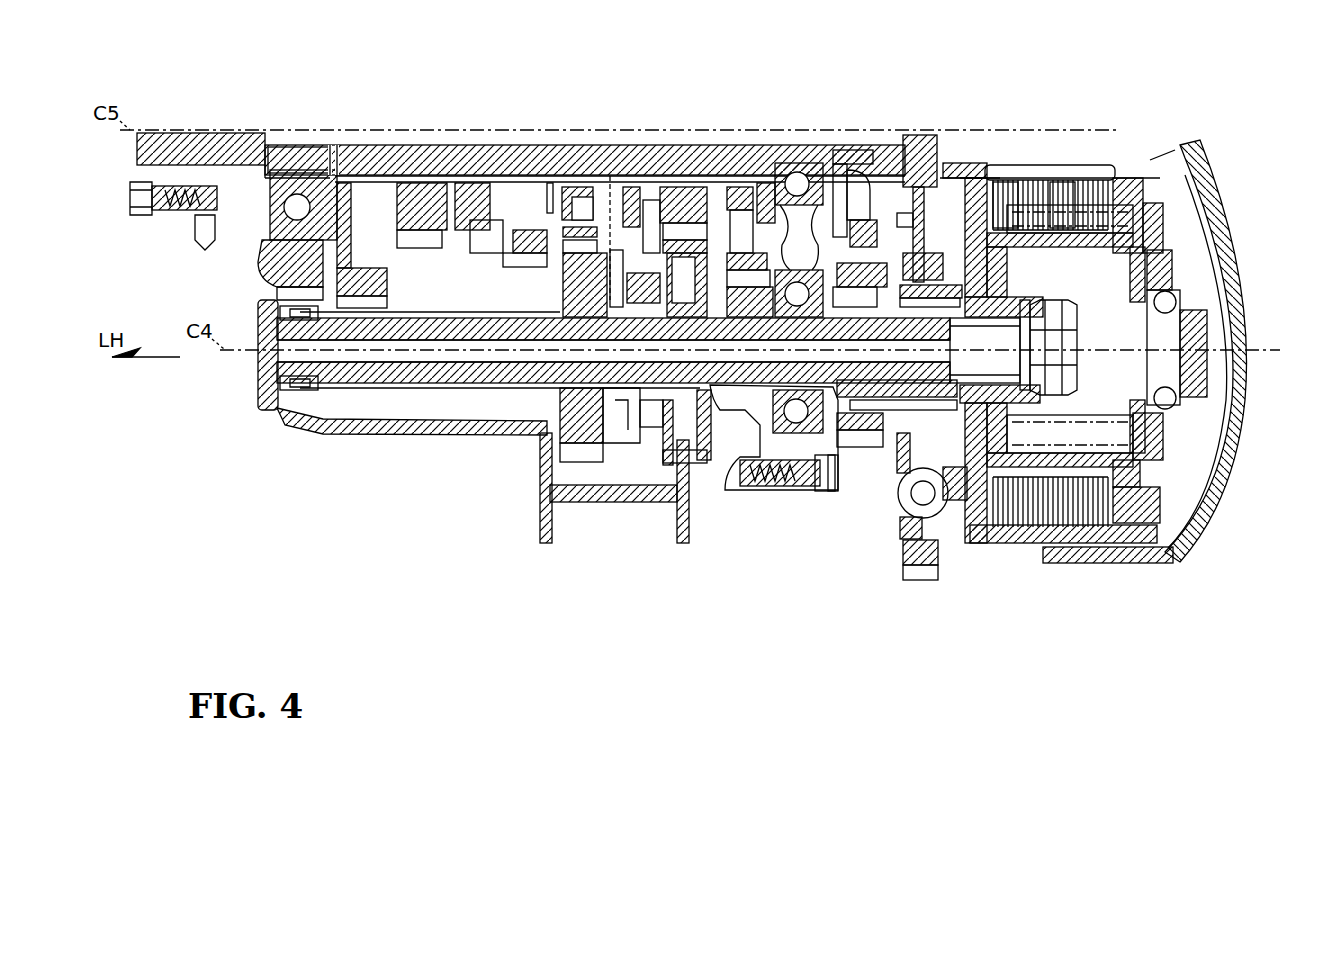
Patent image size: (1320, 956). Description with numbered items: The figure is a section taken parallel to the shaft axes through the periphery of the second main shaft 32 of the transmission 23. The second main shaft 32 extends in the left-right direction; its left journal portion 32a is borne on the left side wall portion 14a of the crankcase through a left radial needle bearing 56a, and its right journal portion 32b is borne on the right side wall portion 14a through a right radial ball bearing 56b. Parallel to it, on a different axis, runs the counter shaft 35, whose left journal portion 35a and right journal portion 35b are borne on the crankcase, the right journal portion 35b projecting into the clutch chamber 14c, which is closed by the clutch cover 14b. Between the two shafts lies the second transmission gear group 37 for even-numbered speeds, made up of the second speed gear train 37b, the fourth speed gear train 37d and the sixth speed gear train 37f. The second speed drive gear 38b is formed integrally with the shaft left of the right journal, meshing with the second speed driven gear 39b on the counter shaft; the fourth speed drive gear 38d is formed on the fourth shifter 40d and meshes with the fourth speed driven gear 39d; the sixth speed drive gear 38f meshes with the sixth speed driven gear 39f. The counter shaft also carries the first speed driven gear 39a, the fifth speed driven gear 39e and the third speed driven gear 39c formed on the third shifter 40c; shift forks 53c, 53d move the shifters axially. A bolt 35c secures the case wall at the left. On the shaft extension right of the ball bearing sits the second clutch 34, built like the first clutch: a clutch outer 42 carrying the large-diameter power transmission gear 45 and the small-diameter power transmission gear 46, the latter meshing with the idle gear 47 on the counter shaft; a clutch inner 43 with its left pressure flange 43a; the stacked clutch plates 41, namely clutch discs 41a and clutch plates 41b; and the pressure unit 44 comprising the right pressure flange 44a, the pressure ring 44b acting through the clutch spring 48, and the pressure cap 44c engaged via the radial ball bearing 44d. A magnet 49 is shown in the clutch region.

The side wall portion of the crankcase 14a is at (275, 260).
The clutch cover 14b is at (1208, 188).
The clutch chamber 14c is at (1187, 237).
The transmission 23 is at (905, 112).
The second main shaft 32 is at (389, 392).
The left journal portion 32a is at (258, 386).
The right journal portion 32b is at (830, 475).
The second clutch 34 is at (1158, 190).
The counter shaft 35 is at (372, 143).
The left journal portion 35a is at (302, 145).
The right journal portion 35b is at (780, 163).
The bolt 35c is at (178, 222).
The second transmission gear group 37 is at (617, 462).
The second speed gear train 37b is at (778, 600).
The fourth speed gear train 37d is at (452, 78).
The sixth speed gear train 37f is at (790, 25).
The second speed drive gear 38b is at (735, 385).
The fourth speed drive gear 38d is at (565, 255).
The sixth speed drive gear 38f is at (745, 290).
The first speed driven gear 39a is at (390, 294).
The second speed driven gear 39b is at (697, 388).
The third speed driven gear 39c is at (530, 258).
The fourth speed driven gear 39d is at (565, 190).
The fifth speed driven gear 39e is at (440, 240).
The sixth speed driven gear 39f is at (735, 255).
The third shifter 40c is at (560, 320).
The fourth shifter 40d is at (735, 195).
The clutch plates 41 is at (1113, 75).
The clutch discs 41a is at (1068, 178).
The clutch plates 41b is at (1017, 178).
The clutch outer 42 is at (1070, 560).
The clutch inner 43 is at (1135, 503).
The left pressure flange 43a is at (963, 530).
The pressure unit 44 is at (1186, 500).
The right pressure flange 44a is at (1160, 538).
The pressure ring 44b is at (1182, 442).
The pressure cap 44c is at (1207, 372).
The radial ball bearing 44d is at (1192, 410).
The large-diameter power transmission gear 45 is at (918, 581).
The small-diameter power transmission gear 46 is at (862, 448).
The idle gear 47 is at (893, 235).
The clutch spring 48 is at (1097, 415).
The magnet 49 is at (1086, 240).
The shift fork 53c is at (610, 186).
The shift fork 53d is at (650, 200).
The left radial needle bearing 56a is at (302, 397).
The right radial ball bearing 56b is at (809, 488).